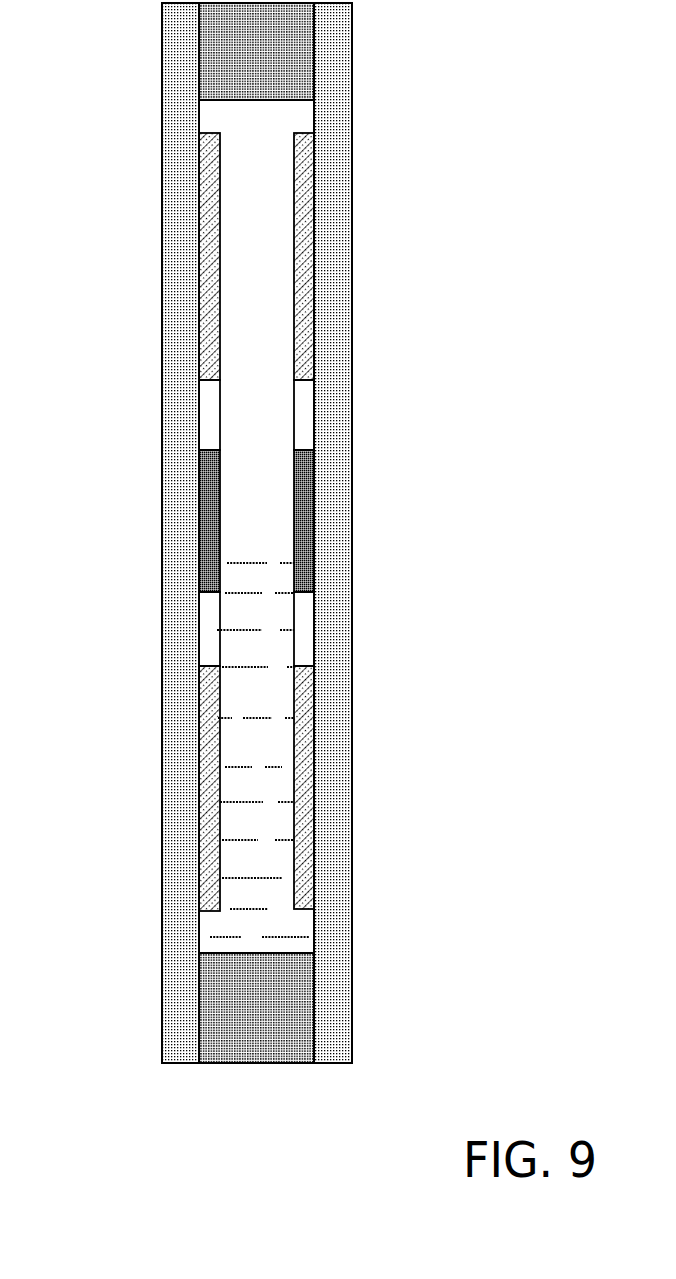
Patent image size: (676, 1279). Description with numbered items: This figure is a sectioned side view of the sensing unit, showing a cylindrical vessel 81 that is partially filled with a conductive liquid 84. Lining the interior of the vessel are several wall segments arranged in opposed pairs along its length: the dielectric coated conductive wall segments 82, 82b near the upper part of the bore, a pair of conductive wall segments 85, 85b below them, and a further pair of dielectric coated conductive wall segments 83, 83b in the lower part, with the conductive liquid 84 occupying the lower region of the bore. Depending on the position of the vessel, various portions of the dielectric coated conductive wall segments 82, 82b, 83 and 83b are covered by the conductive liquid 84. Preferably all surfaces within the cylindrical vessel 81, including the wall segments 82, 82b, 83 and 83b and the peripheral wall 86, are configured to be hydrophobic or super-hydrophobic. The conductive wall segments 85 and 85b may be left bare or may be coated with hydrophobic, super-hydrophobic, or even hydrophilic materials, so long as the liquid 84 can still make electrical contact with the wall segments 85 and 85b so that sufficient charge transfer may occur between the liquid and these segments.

The cylindrical vessel 81 is at (275, 130).
The dielectric coated conductive wall segment 82 is at (308, 257).
The dielectric coated conductive wall segment 82b is at (204, 283).
The dielectric coated conductive wall segment 83 is at (312, 782).
The dielectric coated conductive wall segment 83b is at (212, 817).
The conductive liquid 84 is at (268, 910).
The conductive wall segment 85 is at (317, 532).
The conductive wall segment 85b is at (197, 523).
The peripheral wall 86 is at (233, 100).